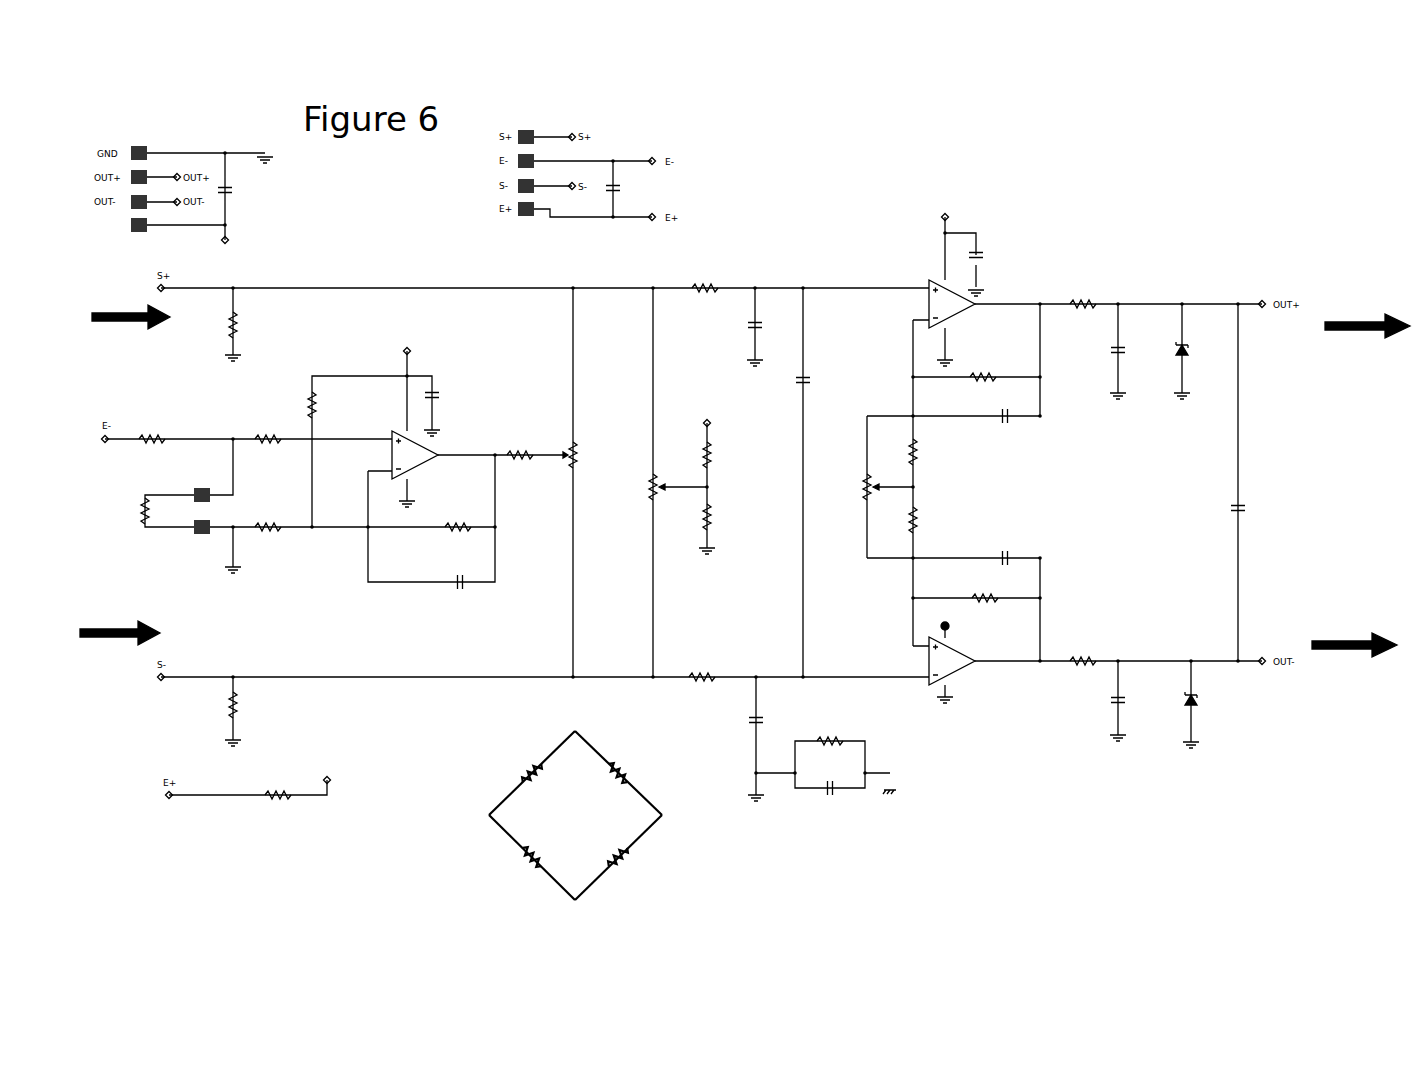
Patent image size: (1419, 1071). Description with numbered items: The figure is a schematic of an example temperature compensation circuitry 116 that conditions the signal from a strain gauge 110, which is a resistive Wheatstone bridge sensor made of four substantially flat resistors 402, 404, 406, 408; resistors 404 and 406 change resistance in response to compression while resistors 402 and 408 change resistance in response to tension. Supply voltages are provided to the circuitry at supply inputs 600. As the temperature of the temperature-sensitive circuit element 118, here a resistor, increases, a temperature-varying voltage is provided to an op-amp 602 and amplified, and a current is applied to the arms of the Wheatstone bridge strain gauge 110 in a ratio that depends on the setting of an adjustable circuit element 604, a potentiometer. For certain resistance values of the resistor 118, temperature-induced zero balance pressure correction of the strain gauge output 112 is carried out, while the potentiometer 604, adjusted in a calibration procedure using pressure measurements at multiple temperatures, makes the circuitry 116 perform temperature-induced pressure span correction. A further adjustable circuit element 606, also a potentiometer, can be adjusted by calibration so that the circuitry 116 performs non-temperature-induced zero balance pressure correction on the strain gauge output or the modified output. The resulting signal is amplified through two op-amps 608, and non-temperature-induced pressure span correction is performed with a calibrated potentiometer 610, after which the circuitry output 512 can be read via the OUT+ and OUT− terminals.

The strain gauge 110 is at (549, 816).
The strain gauge output 112 is at (114, 324).
The temperature compensation circuitry 116 is at (747, 154).
The temperature-sensitive circuit element 118 is at (143, 510).
The resistor 402 is at (522, 768).
The resistor 404 is at (628, 770).
The resistor 406 is at (523, 858).
The resistor 408 is at (625, 862).
The circuitry output 512 is at (1330, 335).
The supply inputs 600 is at (134, 224).
The op-amp 602 is at (438, 450).
The adjustable circuit element 604 is at (569, 446).
The adjustable circuit element 606 is at (650, 488).
The op-amps 608 is at (930, 284).
The calibrated potentiometer 610 is at (869, 496).